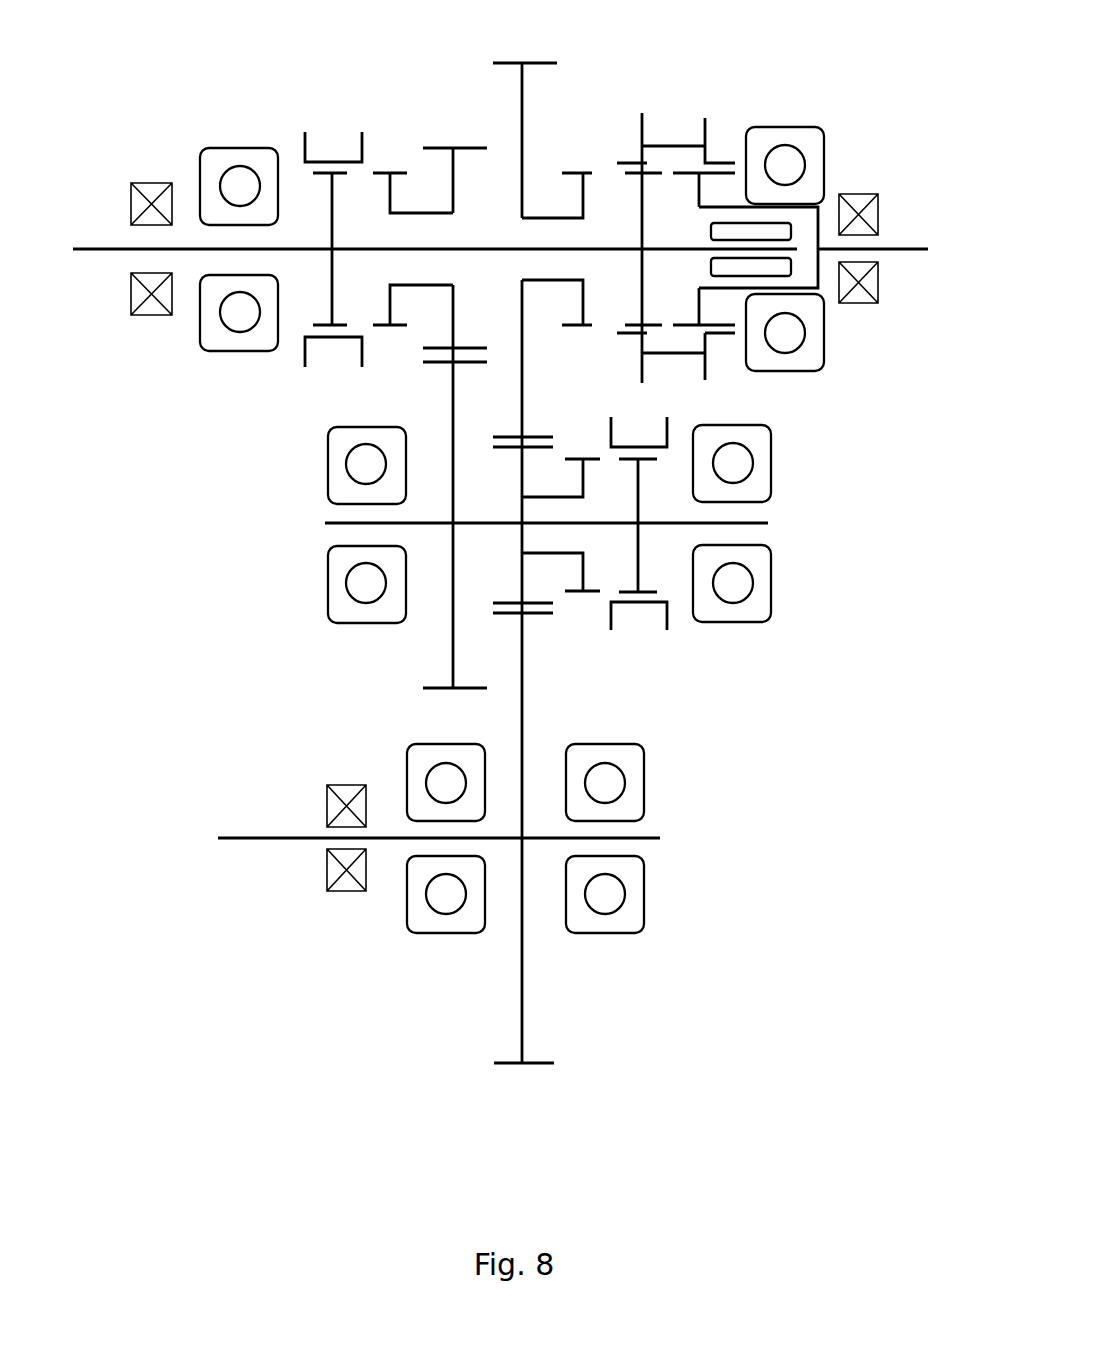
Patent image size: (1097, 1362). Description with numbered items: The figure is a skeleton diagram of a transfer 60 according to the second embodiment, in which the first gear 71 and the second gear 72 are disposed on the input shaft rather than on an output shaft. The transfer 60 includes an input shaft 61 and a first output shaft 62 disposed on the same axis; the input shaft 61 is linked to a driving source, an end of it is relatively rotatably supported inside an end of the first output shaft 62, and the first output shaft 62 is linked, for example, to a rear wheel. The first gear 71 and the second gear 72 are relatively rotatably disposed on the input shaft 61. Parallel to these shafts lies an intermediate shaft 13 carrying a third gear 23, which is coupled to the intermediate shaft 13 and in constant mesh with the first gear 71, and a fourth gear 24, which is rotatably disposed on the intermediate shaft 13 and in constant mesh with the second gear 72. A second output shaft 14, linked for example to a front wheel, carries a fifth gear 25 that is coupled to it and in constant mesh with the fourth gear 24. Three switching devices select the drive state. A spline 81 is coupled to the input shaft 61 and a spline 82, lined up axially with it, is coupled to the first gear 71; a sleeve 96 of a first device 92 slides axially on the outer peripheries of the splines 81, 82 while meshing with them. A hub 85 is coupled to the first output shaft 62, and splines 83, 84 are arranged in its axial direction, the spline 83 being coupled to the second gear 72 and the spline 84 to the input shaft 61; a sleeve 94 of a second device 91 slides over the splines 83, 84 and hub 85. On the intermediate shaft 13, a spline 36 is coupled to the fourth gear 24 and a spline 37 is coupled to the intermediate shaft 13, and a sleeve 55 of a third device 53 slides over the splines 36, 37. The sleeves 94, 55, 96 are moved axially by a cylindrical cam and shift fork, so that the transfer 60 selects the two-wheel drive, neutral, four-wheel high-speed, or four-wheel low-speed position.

The intermediate shaft 13 is at (338, 527).
The second output shaft 14 is at (258, 839).
The third gear 23 is at (436, 690).
The fourth gear 24 is at (540, 437).
The fifth gear 25 is at (541, 1066).
The spline 36 is at (588, 598).
The spline 37 is at (640, 598).
The third device 53 is at (678, 589).
The sleeve 55 is at (668, 616).
The transfer 60 is at (847, 98).
The input shaft 61 is at (92, 250).
The first output shaft 62 is at (905, 250).
The first gear 71 is at (439, 147).
The second gear 72 is at (539, 62).
The spline 81 is at (320, 330).
The spline 82 is at (398, 332).
The spline 83 is at (567, 172).
The spline 84 is at (632, 333).
The hub 85 is at (720, 330).
The second device 91 is at (676, 195).
The first device 92 is at (308, 215).
The sleeve 94 is at (643, 130).
The sleeve 96 is at (303, 145).